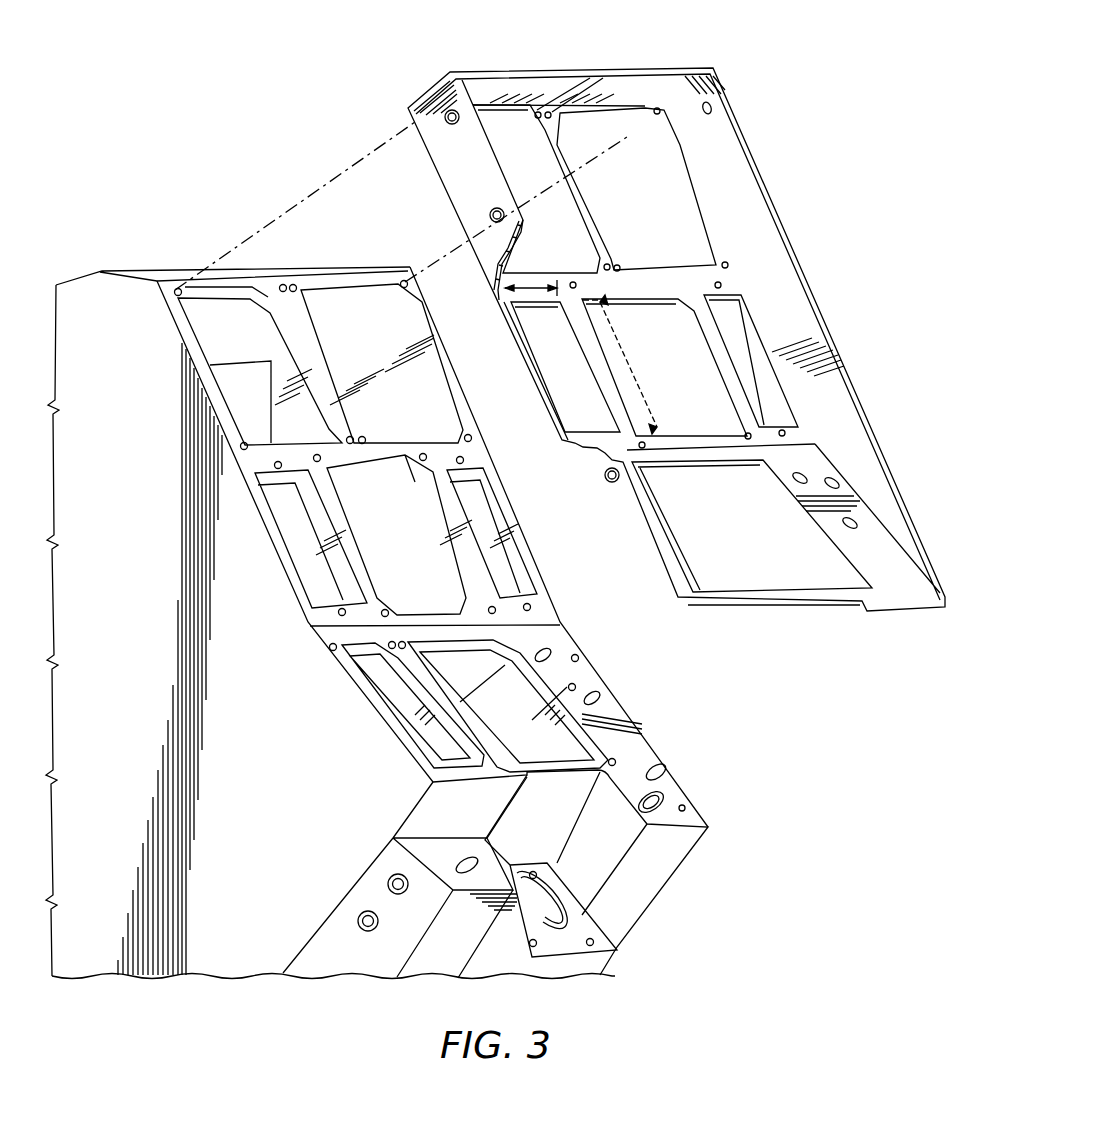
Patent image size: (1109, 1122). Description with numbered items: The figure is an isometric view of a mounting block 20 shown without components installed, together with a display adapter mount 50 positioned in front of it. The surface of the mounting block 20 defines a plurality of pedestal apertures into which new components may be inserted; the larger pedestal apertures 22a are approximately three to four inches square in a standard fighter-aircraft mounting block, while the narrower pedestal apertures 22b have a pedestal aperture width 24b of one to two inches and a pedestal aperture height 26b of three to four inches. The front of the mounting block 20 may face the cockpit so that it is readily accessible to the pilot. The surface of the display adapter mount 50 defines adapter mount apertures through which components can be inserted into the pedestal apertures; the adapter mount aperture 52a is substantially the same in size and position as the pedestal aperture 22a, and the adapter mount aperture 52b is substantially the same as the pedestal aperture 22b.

The mounting block 20 is at (88, 276).
The pedestal aperture 22a is at (338, 304).
The pedestal aperture 22b is at (306, 553).
The pedestal aperture width 24b is at (533, 290).
The pedestal aperture height 26b is at (623, 348).
The display adapter mount 50 is at (757, 157).
The adapter mount aperture 52a is at (503, 138).
The adapter mount aperture 52b is at (553, 358).